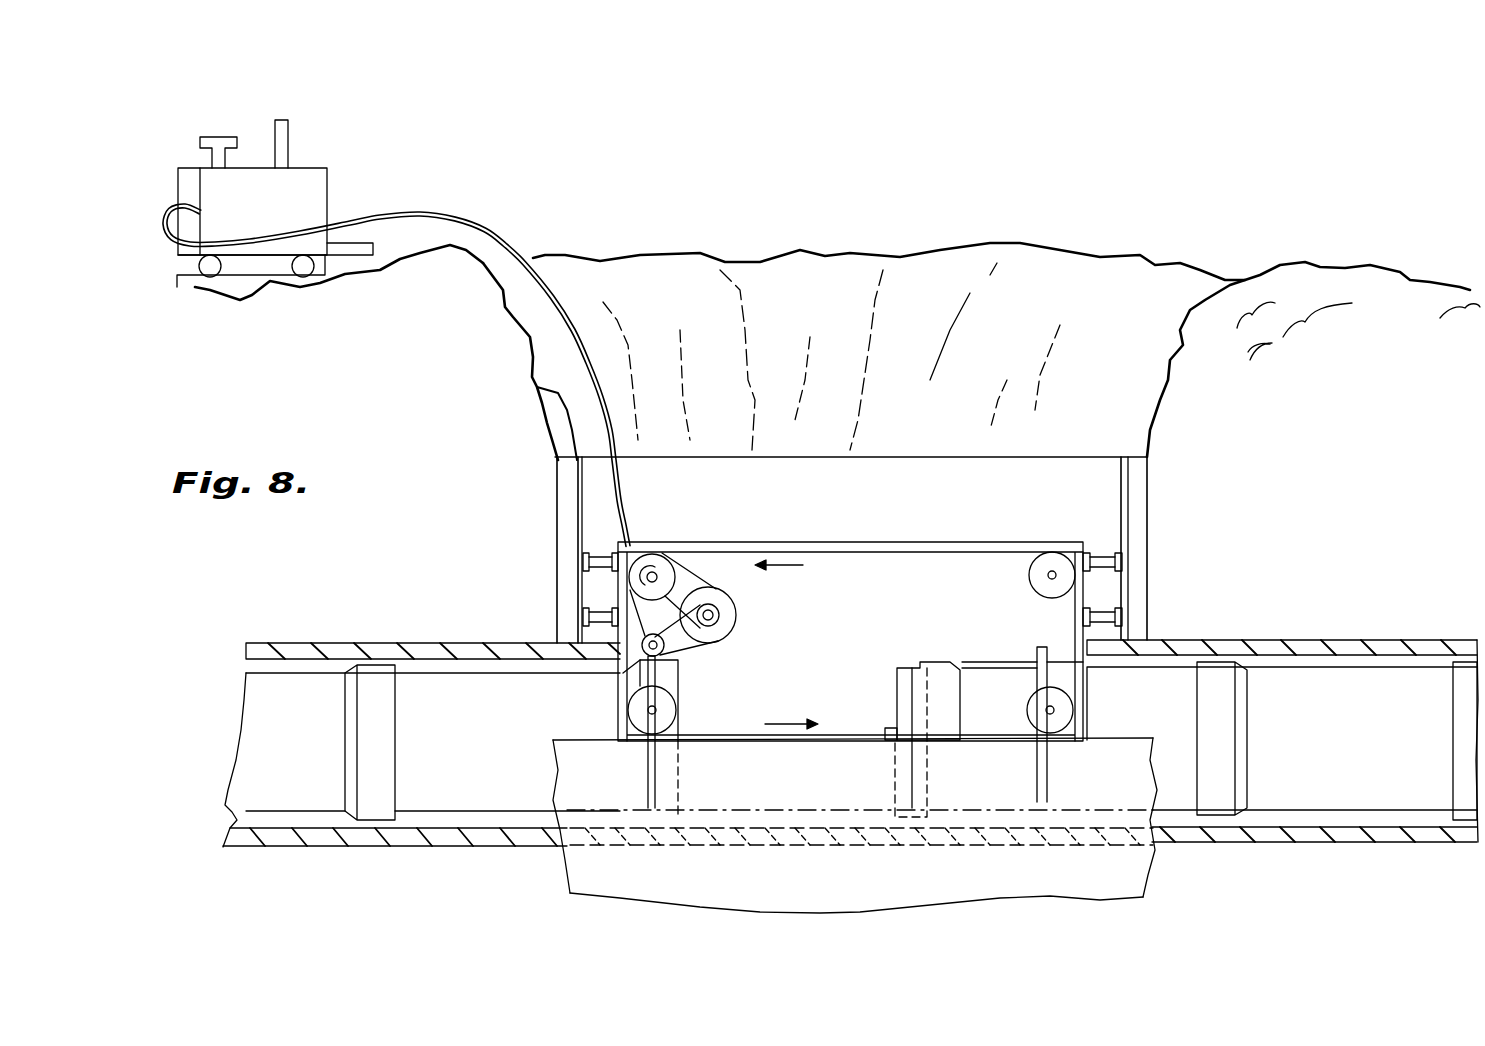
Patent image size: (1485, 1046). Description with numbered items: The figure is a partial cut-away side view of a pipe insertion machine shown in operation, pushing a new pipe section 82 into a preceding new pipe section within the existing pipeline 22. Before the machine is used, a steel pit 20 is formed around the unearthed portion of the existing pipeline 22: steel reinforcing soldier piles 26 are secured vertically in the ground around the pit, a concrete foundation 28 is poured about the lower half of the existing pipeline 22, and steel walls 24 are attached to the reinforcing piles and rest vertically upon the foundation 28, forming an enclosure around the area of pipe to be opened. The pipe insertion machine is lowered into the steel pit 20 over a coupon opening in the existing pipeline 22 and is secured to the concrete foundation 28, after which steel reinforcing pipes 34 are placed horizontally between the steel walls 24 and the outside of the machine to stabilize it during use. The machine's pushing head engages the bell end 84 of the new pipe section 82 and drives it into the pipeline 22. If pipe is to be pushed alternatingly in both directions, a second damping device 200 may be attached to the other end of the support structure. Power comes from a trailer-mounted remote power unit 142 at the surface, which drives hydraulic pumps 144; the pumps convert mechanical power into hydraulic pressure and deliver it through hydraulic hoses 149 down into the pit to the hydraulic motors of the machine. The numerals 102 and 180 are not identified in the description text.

The steel pit 20 is at (878, 449).
The existing pipeline 22 is at (300, 648).
The steel walls 24 is at (538, 392).
The steel reinforcing soldier piles 26 is at (562, 487).
The concrete foundation 28 is at (608, 878).
The steel reinforcing pipes 34 is at (586, 617).
The new pipe section 82 is at (933, 665).
The bell end 84 is at (895, 683).
The cutting blade 102 is at (908, 758).
The remote power unit 142 is at (320, 187).
The hydraulic pumps 144 is at (188, 170).
The hydraulic hoses 149 is at (460, 226).
The rear strut 180 is at (1037, 653).
The second damping device 200 is at (660, 780).